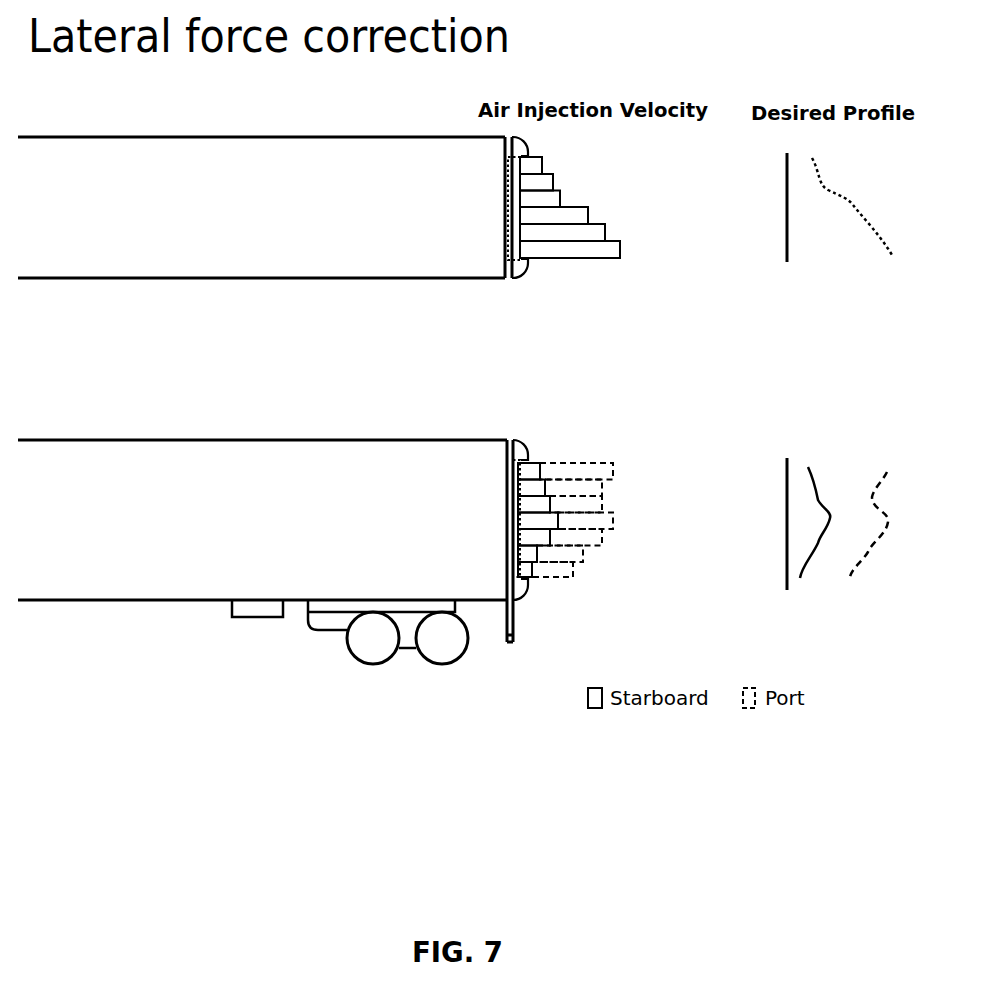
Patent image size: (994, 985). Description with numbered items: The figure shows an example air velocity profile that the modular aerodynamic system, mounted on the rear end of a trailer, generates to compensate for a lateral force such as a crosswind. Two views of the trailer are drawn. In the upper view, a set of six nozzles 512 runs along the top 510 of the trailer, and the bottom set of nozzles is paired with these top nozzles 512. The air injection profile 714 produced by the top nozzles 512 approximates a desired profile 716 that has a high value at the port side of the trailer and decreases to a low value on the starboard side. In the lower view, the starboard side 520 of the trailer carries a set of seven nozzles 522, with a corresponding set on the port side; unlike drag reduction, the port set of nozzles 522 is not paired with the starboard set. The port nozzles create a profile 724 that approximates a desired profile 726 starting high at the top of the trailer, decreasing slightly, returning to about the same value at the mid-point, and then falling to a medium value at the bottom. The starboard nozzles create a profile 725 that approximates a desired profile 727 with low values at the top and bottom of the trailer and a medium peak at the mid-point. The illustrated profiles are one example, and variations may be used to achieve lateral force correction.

The top 510 is at (273, 207).
The nozzles 512 is at (507, 215).
The air injection profile 714 is at (600, 191).
The desired profile 716 is at (845, 186).
The starboard side 520 is at (273, 552).
The nozzles 522 is at (508, 520).
The profile 725 is at (530, 462).
The profile 724 is at (630, 527).
The desired profile 727 is at (818, 470).
The desired profile 726 is at (872, 565).